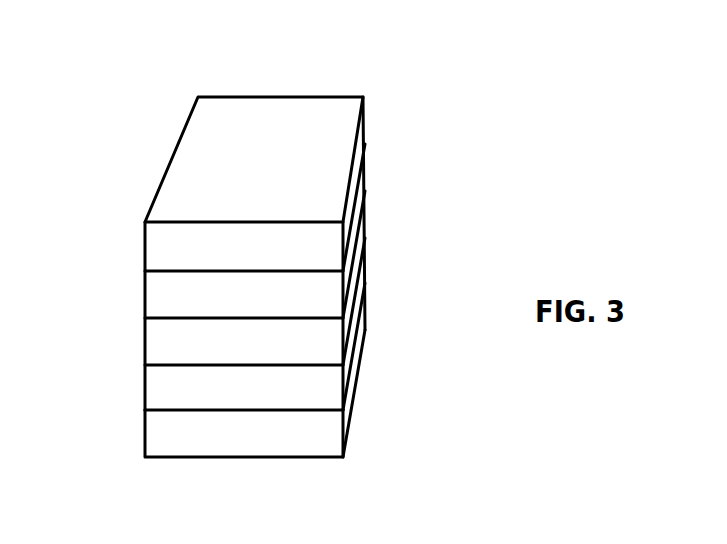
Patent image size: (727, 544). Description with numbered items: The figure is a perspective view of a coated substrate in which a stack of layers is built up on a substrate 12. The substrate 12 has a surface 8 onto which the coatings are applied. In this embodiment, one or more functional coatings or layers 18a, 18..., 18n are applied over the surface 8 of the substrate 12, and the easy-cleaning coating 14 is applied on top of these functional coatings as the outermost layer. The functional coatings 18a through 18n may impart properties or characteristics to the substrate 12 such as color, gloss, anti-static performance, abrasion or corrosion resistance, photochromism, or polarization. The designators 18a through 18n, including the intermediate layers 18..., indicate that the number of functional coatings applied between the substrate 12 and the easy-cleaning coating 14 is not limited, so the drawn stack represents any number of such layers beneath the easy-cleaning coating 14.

The easy-cleaning coating 14 is at (145, 230).
The functional coating 18a is at (145, 286).
The functional coatings 18... is at (145, 336).
The functional coating 18n is at (145, 386).
The surface 8 is at (218, 410).
The substrate 12 is at (142, 440).